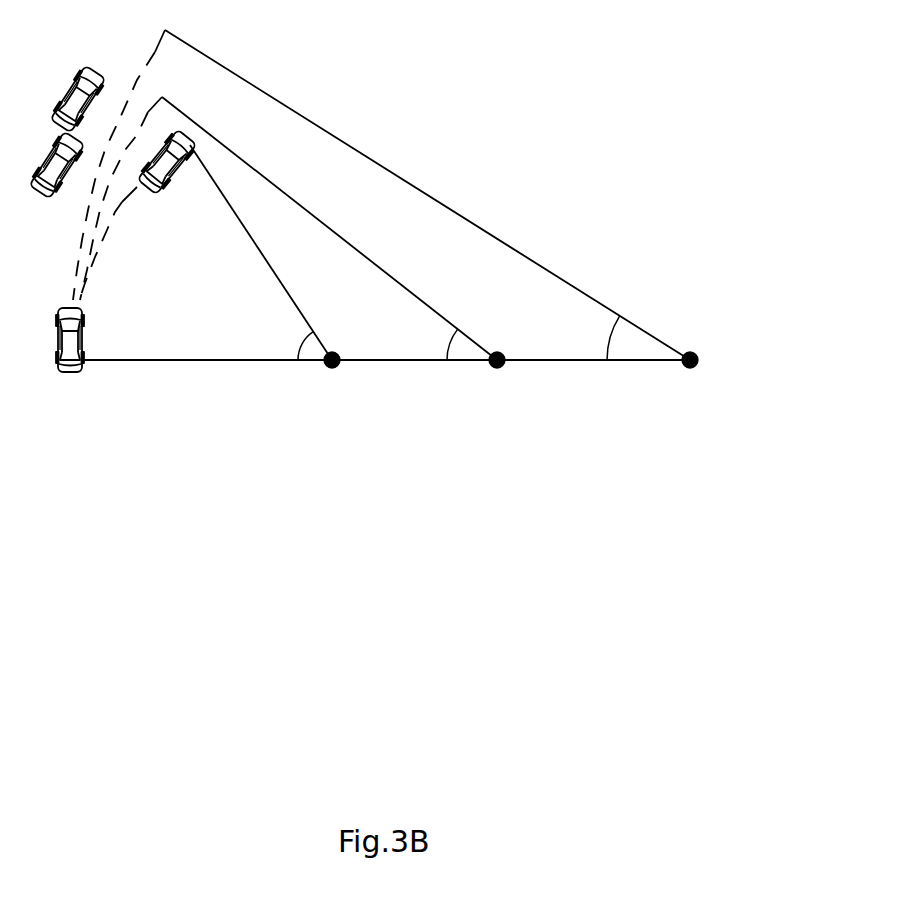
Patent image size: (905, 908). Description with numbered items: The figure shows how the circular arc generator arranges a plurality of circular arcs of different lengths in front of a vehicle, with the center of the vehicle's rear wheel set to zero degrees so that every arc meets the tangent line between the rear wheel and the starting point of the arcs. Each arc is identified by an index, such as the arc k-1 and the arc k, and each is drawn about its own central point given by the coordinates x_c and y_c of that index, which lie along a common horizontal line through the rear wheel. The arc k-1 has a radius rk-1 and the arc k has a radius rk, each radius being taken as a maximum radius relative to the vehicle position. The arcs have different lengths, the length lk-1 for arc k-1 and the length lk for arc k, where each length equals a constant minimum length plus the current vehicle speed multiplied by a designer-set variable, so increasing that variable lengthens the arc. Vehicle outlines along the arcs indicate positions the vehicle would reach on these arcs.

The circular arc index k-1 is at (295, 361).
The circular arc index k is at (512, 361).
The radius of circular arc k-1 rk-1 is at (207, 377).
The radius of circular arc k rk is at (414, 377).
The length of circular arc k-1 lk-1 is at (120, 241).
The length of circular arc k lk is at (121, 198).